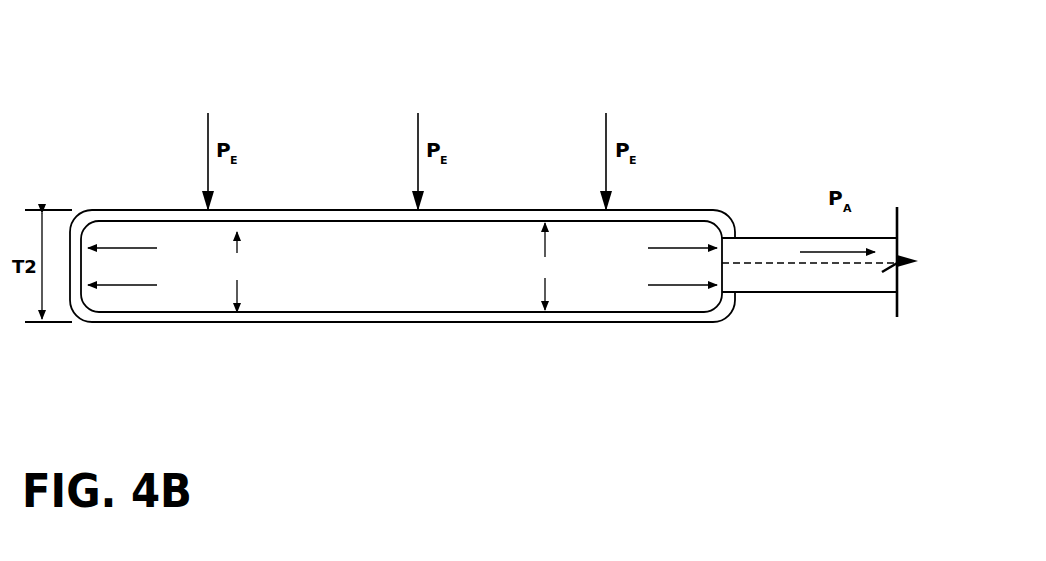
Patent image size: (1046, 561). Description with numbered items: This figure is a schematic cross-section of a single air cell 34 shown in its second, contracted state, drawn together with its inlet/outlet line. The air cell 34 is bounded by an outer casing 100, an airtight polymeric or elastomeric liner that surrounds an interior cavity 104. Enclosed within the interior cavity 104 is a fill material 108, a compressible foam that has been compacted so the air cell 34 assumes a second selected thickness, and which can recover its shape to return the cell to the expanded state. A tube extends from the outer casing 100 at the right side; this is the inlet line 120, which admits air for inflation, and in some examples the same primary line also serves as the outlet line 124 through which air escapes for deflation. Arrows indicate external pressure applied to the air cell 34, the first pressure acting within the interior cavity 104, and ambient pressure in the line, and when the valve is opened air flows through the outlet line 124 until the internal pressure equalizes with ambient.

The air cell 34 is at (693, 128).
The outer casing 100 is at (153, 210).
The interior cavity 104 is at (318, 288).
The fill material 108 is at (410, 281).
The inlet line 120 is at (810, 282).
The outlet line 124 is at (772, 250).